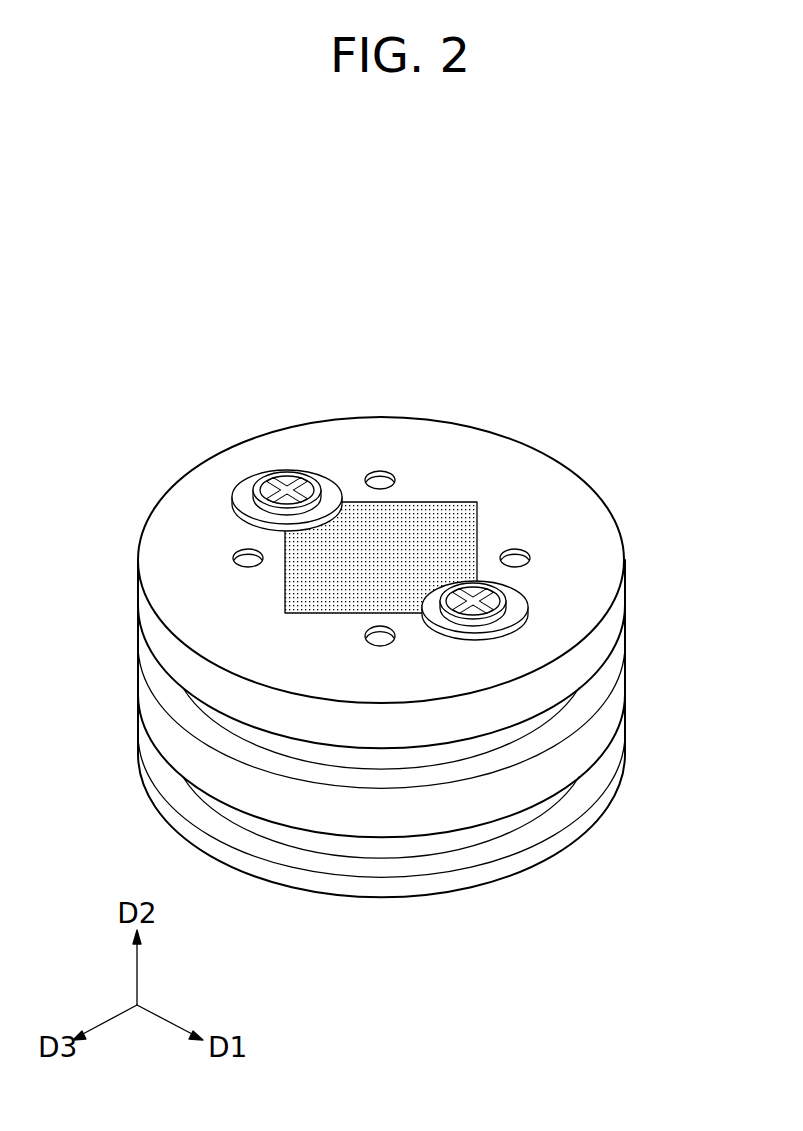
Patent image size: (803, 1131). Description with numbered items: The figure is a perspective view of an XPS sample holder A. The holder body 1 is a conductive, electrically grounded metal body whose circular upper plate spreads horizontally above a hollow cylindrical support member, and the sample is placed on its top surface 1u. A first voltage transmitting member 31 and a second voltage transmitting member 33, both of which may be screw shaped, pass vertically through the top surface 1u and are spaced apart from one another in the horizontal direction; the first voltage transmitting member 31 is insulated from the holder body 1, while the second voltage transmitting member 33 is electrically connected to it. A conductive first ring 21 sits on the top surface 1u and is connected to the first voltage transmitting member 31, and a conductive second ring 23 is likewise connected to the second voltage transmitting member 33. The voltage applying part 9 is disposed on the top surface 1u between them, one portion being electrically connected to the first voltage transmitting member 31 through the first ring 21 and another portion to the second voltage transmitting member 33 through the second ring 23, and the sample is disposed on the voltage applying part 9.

The XPS sample holder A is at (595, 389).
The holder body 1 is at (615, 614).
The top surface 1u is at (596, 527).
The voltage applying part 9 is at (431, 523).
The first ring 21 is at (242, 498).
The first voltage transmitting member 31 is at (287, 472).
The second ring 23 is at (505, 632).
The second voltage transmitting member 33 is at (505, 604).